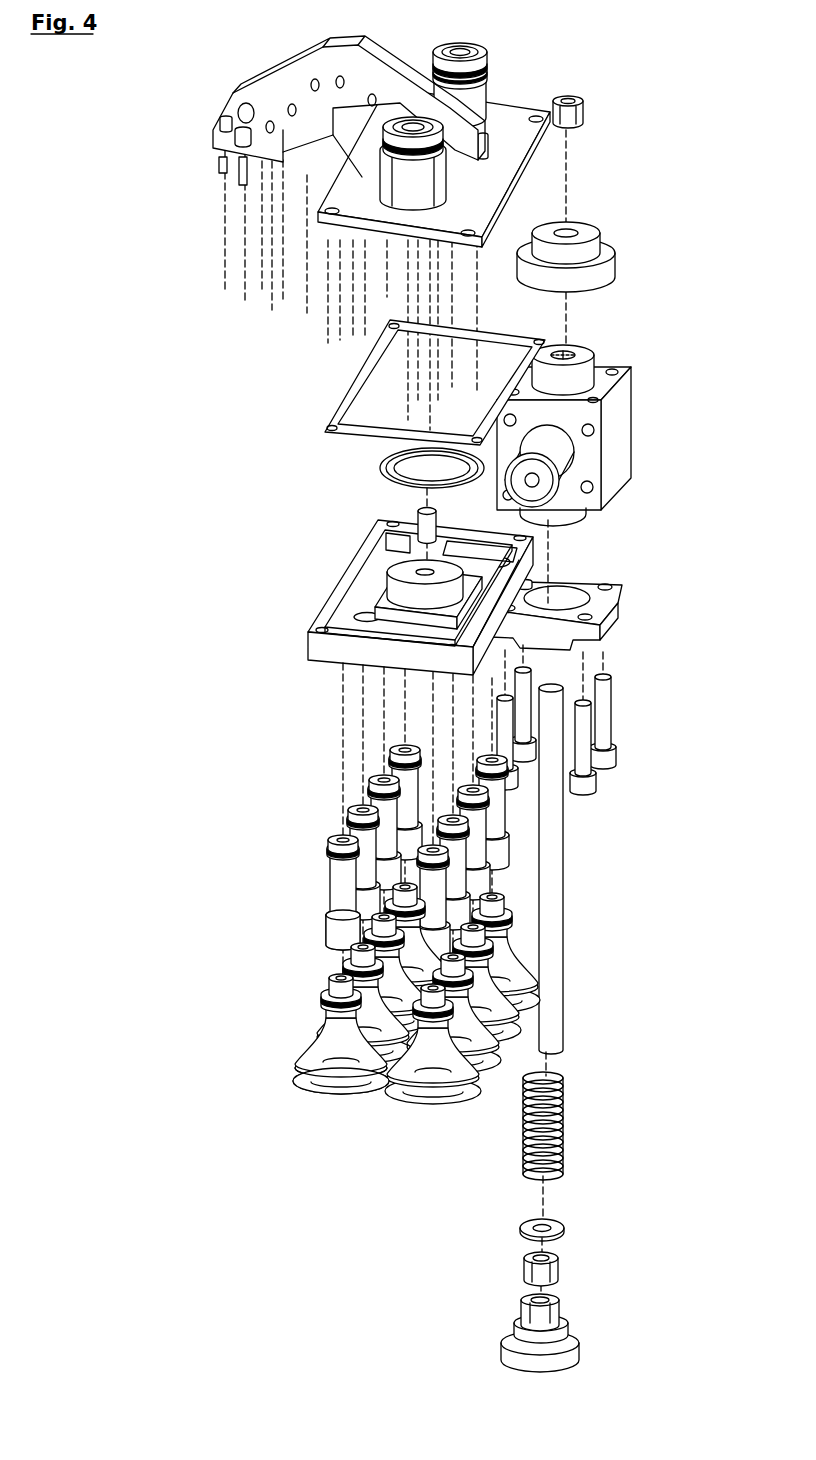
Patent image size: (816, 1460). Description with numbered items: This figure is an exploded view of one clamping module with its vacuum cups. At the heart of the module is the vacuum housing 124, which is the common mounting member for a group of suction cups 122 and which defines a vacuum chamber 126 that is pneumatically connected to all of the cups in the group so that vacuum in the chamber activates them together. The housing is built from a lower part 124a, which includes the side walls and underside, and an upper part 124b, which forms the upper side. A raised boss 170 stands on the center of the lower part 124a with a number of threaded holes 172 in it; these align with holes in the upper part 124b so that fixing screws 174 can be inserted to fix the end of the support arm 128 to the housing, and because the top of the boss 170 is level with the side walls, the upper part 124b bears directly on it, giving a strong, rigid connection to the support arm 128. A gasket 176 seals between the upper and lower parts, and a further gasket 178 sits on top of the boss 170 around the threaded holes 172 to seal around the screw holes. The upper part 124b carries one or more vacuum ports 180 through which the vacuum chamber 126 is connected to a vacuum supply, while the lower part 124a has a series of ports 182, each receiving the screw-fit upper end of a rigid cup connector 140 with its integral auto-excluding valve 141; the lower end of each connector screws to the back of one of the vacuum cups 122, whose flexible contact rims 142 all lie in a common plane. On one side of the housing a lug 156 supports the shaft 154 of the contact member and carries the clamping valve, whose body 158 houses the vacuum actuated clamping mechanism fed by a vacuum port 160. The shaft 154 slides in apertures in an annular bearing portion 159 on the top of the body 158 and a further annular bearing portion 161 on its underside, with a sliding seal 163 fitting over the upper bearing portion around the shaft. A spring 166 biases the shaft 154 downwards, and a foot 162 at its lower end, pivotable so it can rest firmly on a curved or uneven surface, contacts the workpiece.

The suction cups 122 is at (317, 1052).
The vacuum housing 124 is at (313, 653).
The lower part 124a is at (340, 660).
The upper part 124b is at (503, 110).
The vacuum chamber 126 is at (353, 627).
The support arm 128 is at (298, 72).
The cup connector 140 is at (337, 922).
The auto-excluding valve 141 is at (322, 871).
The contact rim 142 is at (315, 1082).
The shaft 154 is at (548, 936).
The lug 156 is at (607, 613).
The body 158 is at (613, 430).
The annular bearing portion 159 is at (580, 373).
The vacuum port 160 is at (543, 468).
The further annular bearing portion 161 is at (580, 517).
The foot 162 is at (568, 1343).
The sliding seal 163 is at (600, 268).
The spring 166 is at (562, 1096).
The raised boss 170 is at (393, 568).
The threaded holes 172 is at (348, 610).
The fixing screws 174 is at (483, 140).
The gasket 176 is at (330, 416).
The further gasket 178 is at (372, 469).
The vacuum ports 180 is at (483, 62).
The ports 182 is at (516, 560).